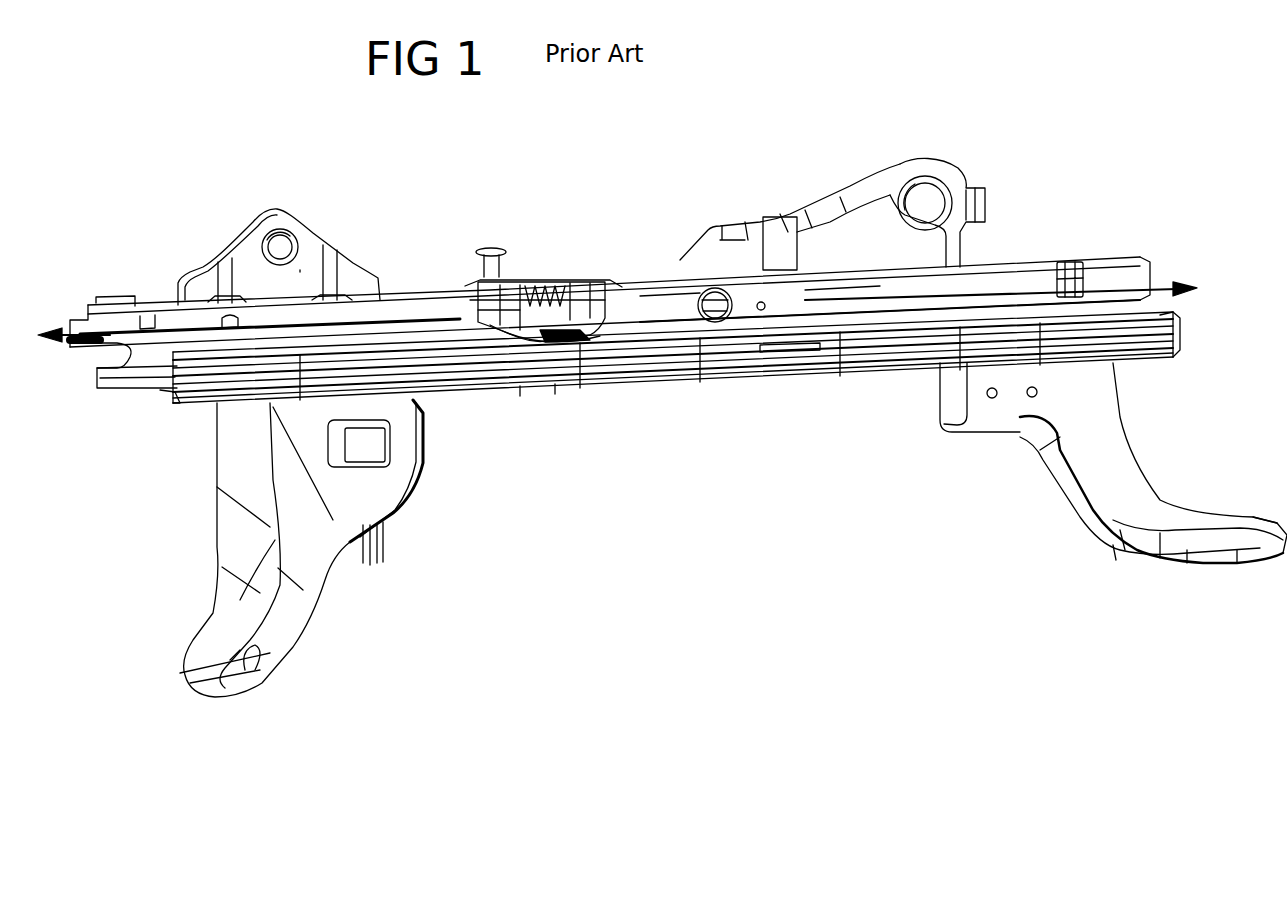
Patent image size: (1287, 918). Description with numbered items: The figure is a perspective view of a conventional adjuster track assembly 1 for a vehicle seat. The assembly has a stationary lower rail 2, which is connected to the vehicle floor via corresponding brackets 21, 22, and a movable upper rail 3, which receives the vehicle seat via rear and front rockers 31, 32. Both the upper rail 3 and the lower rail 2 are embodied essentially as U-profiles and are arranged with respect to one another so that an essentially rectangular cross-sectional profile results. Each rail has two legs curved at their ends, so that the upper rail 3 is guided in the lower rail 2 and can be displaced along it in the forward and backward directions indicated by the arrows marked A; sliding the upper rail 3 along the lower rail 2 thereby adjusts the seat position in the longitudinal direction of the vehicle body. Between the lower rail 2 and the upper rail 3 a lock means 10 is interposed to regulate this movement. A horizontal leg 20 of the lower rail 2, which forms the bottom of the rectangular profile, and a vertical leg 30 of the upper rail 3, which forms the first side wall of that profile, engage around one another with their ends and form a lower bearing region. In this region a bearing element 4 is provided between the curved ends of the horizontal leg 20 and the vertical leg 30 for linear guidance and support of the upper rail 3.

The adjuster track assembly 1 is at (782, 188).
The lower rail 2 is at (1172, 336).
The upper rail 3 is at (637, 278).
The bearing element 4 is at (800, 357).
The lock means 10 is at (540, 270).
The horizontal leg 20 is at (165, 402).
The bracket 21 is at (297, 614).
The bracket 22 is at (1097, 493).
The vertical leg 30 is at (165, 325).
The rocker 31 is at (268, 232).
The rocker 32 is at (926, 186).